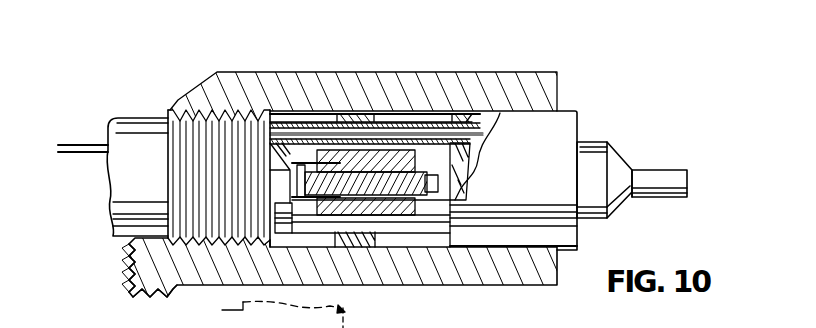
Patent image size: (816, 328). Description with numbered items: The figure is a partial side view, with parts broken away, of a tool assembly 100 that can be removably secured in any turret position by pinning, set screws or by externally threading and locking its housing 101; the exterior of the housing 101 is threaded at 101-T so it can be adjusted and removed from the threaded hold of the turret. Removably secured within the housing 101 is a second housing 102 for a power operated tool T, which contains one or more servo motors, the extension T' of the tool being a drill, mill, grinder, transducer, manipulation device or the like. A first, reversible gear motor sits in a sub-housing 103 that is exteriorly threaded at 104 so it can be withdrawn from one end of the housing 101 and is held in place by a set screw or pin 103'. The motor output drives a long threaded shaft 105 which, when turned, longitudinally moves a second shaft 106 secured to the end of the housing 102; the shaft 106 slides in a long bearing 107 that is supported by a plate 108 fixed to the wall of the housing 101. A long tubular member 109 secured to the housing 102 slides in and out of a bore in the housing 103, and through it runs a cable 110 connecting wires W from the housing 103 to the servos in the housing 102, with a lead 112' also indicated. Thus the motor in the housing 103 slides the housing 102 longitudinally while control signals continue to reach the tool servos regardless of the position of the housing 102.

The tool assembly 100 is at (489, 58).
The housing 101 is at (364, 88).
The threaded exterior surface 101-T is at (128, 287).
The second housing 102 is at (556, 125).
The gear motor housing 103 is at (137, 157).
The set screw or pin 103' is at (101, 274).
The exterior threading 104 is at (210, 133).
The long threaded shaft 105 is at (315, 112).
The second shaft 106 is at (400, 122).
The long bearing 107 is at (413, 217).
The plate 108 is at (380, 250).
The long tubular member 109 is at (445, 120).
The cable 110 is at (483, 133).
The conductor lead 112' is at (316, 314).
The wire W is at (85, 140).
The power operated tool T is at (614, 157).
The tool extension T' is at (671, 158).